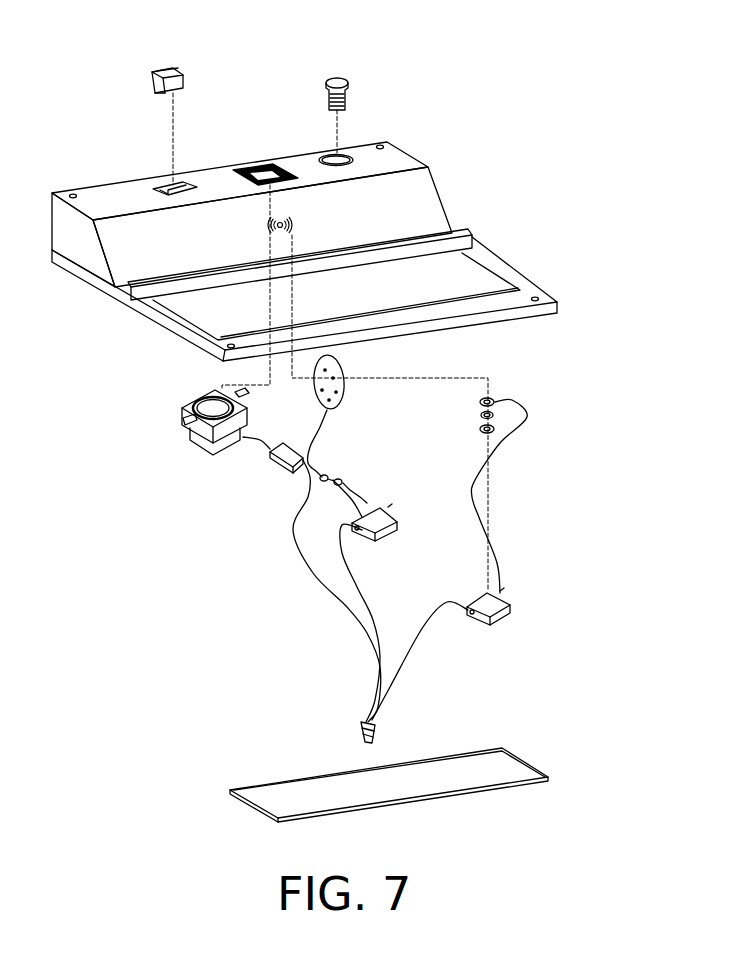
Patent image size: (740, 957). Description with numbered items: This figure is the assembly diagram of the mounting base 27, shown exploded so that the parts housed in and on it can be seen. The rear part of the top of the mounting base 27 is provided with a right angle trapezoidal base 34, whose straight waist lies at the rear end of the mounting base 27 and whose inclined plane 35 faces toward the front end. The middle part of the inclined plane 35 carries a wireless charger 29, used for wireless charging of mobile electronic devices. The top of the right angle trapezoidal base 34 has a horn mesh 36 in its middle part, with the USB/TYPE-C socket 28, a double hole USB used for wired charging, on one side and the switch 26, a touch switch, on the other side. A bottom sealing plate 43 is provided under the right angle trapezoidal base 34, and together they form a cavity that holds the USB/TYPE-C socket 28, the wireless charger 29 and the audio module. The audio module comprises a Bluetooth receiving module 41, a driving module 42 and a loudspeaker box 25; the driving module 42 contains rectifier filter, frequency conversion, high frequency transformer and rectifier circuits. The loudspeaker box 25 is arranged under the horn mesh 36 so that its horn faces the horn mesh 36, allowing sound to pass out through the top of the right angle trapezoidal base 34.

The loudspeaker box 25 is at (148, 508).
The switch 26 is at (396, 62).
The mounting base 27 is at (304, 351).
The USB/TYPE-C socket 28 is at (106, 59).
The wireless charger 29 is at (264, 467).
The right angle trapezoidal base 34 is at (72, 267).
The inclined plane 35 is at (292, 211).
The horn mesh 36 is at (290, 92).
The Bluetooth receiving module 41 is at (249, 631).
The driving module 42 is at (564, 511).
The bottom sealing plate 43 is at (441, 706).